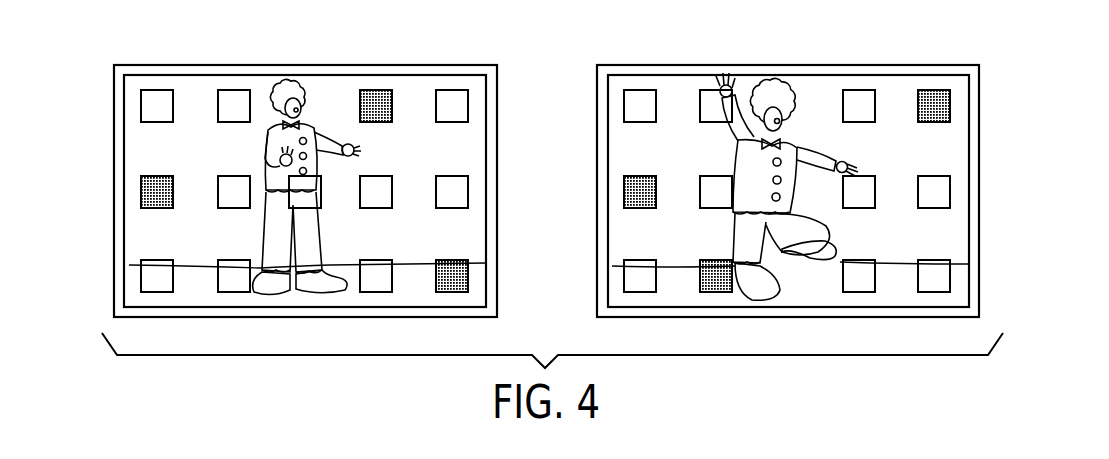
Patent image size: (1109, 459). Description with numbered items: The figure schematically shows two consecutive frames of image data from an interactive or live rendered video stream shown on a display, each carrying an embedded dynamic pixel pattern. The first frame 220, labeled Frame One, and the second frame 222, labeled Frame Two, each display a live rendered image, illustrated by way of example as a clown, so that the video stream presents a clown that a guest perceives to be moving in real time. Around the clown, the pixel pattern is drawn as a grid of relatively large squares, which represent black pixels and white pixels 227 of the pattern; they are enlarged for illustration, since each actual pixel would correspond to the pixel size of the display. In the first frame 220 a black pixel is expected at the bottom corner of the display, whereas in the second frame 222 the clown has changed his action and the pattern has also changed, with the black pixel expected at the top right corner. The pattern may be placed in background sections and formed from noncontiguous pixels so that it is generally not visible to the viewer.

The first frame 220 is at (514, 79).
The second frame 222 is at (1004, 60).
The white pixel 227 is at (375, 292).